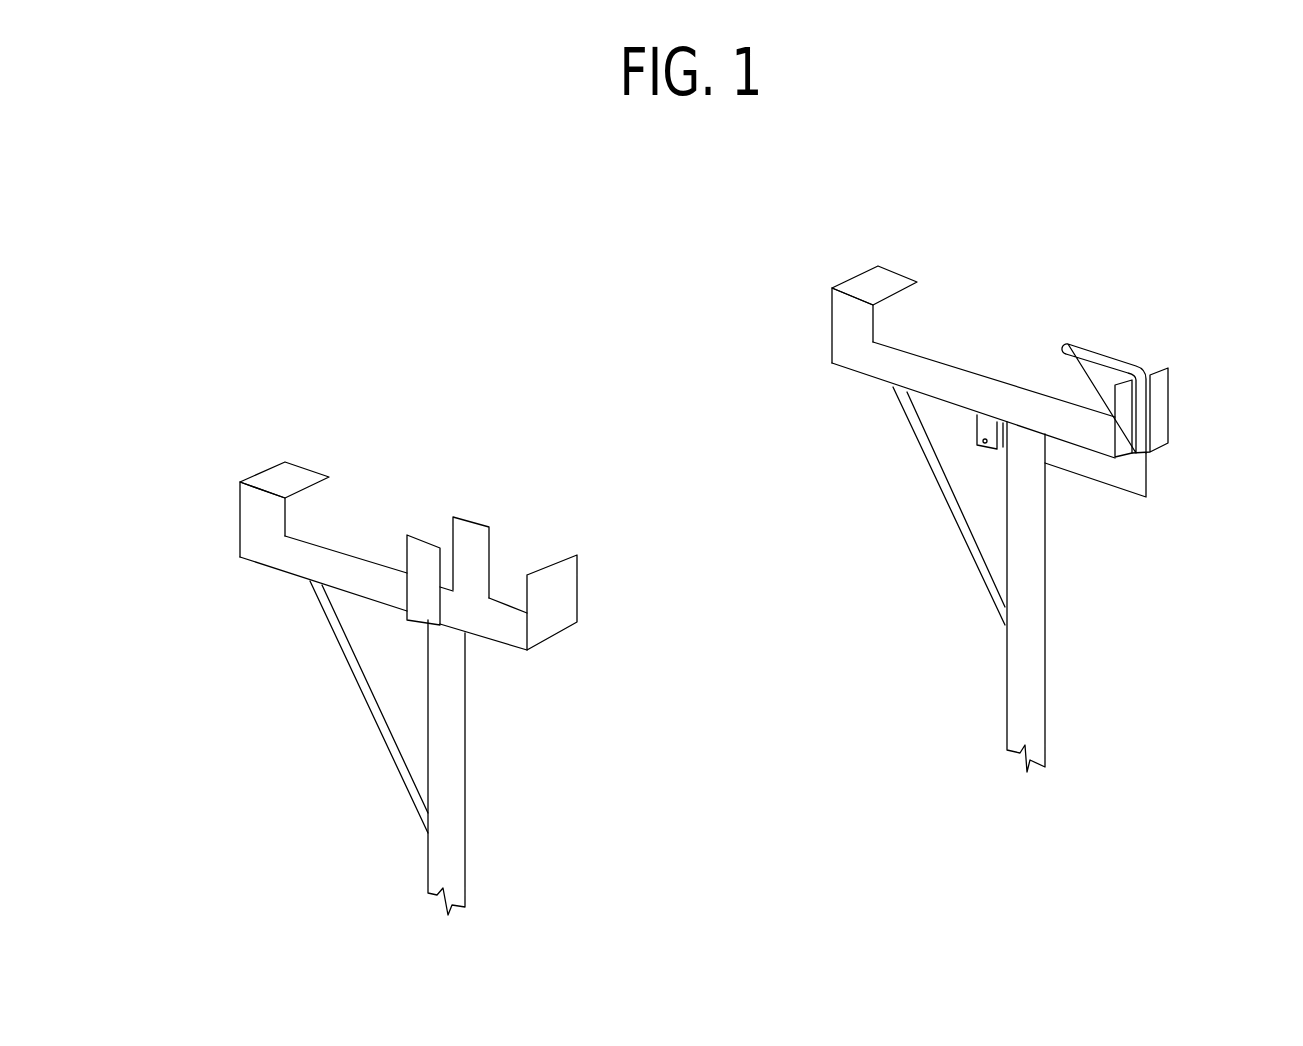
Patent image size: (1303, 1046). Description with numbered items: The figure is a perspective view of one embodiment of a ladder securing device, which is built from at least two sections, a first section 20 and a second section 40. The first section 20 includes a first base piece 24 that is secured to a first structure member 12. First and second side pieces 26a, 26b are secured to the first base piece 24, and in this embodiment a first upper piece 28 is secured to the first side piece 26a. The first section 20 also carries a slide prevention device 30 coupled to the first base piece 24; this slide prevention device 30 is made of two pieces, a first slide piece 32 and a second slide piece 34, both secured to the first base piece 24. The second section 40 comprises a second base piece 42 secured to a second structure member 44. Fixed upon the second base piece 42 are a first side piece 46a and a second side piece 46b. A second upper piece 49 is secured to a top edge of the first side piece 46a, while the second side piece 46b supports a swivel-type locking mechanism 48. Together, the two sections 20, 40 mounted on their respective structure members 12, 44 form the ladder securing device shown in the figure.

The first structure member 12 is at (442, 735).
The first section 20 is at (407, 647).
The first base piece 24 is at (297, 560).
The first side piece 26a is at (250, 468).
The second side piece 26b is at (552, 585).
The first upper piece 28 is at (285, 473).
The slide prevention device 30 is at (522, 538).
The first slide piece 32 is at (423, 555).
The second slide piece 34 is at (477, 543).
The second section 40 is at (1007, 487).
The second base piece 42 is at (947, 385).
The second structure member 44 is at (1022, 593).
The first side piece 46a is at (835, 289).
The second side piece 46b is at (1172, 470).
The swivel-type locking mechanism 48 is at (1158, 458).
The second upper piece 49 is at (867, 283).